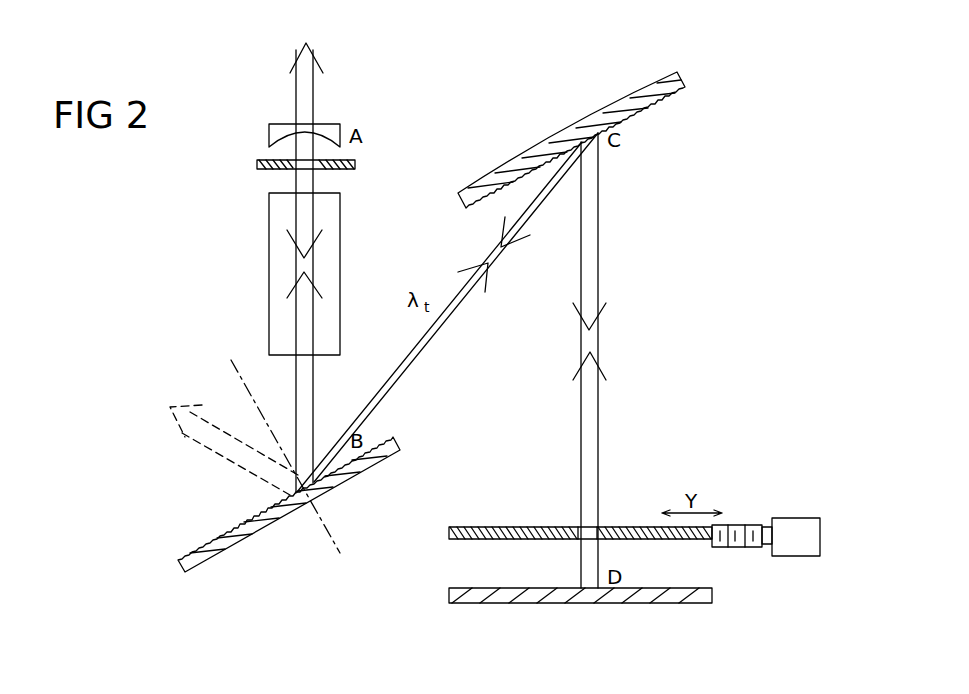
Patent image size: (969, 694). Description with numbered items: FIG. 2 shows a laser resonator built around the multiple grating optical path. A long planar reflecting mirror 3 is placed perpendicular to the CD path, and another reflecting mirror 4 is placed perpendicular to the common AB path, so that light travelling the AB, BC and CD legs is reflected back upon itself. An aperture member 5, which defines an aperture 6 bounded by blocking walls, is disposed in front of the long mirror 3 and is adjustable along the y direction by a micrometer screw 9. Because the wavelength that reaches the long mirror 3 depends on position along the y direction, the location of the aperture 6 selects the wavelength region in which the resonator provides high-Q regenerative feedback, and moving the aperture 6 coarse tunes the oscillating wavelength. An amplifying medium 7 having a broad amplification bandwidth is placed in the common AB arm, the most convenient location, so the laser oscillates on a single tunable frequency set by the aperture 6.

The long planar reflecting mirror 3 is at (690, 589).
The reflecting mirror 4 is at (269, 130).
The aperture member 5 is at (495, 527).
The aperture 6 is at (577, 527).
The amplifying medium 7 is at (269, 253).
The micrometer screw 9 is at (820, 519).